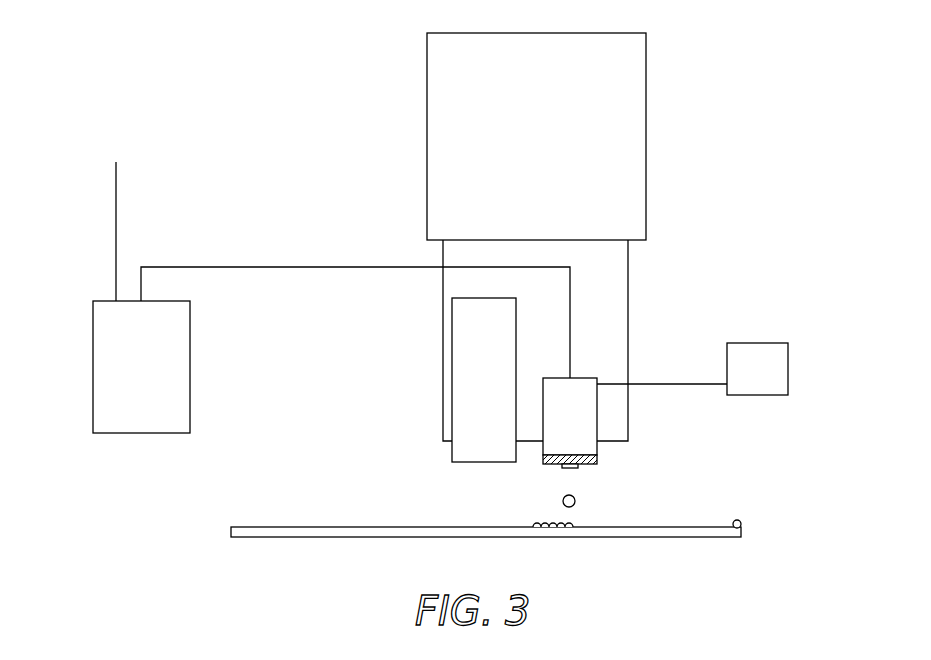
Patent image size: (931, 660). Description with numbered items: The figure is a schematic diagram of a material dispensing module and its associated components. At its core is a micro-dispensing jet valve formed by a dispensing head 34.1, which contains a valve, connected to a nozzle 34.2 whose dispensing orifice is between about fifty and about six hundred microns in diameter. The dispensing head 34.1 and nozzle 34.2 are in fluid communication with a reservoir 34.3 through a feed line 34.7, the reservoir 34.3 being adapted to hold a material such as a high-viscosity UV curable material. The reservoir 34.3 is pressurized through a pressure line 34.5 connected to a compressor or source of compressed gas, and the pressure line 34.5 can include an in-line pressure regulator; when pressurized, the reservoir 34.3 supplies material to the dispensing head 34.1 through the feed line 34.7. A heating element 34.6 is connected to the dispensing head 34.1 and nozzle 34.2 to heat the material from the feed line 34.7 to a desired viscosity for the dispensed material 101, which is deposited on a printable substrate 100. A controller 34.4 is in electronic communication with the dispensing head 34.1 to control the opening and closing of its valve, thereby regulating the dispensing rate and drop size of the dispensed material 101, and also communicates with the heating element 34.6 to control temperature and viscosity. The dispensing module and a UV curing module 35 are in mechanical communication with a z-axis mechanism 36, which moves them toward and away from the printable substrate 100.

The z-axis mechanism 36 is at (648, 113).
The UV curing module 35 is at (451, 370).
The dispensing head 34.1 is at (599, 401).
The nozzle 34.2 is at (569, 470).
The reservoir 34.3 is at (121, 370).
The controller 34.4 is at (762, 338).
The pressure line 34.5 is at (115, 191).
The heating element 34.6 is at (599, 458).
The feed line 34.7 is at (298, 264).
The printable substrate 100 is at (298, 524).
The dispensed material 101 is at (576, 519).